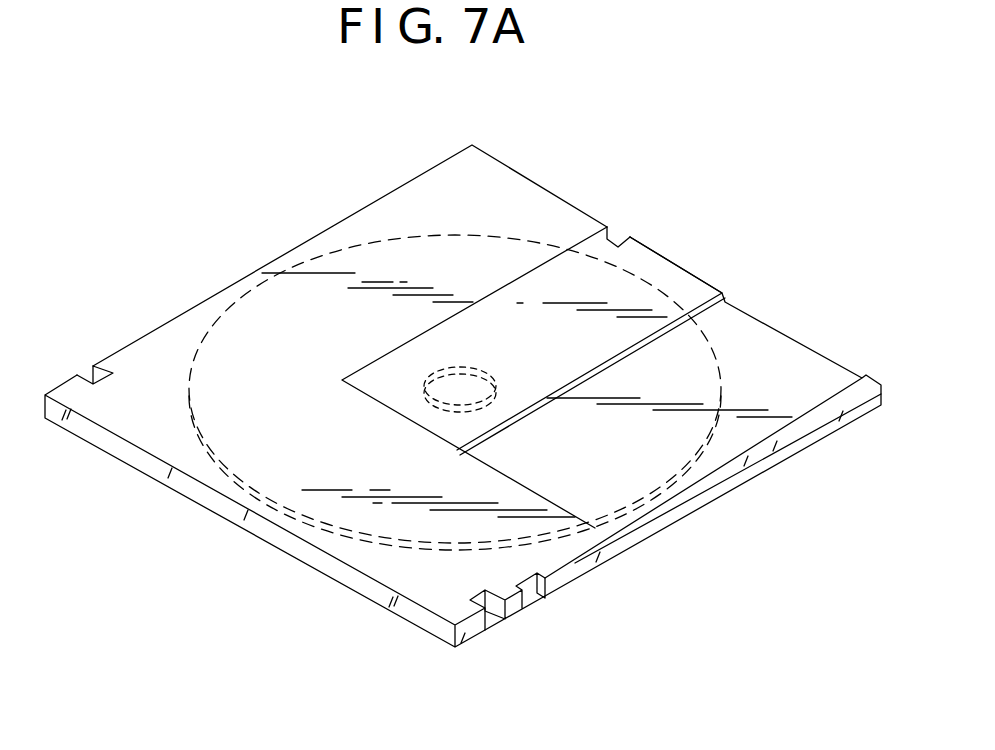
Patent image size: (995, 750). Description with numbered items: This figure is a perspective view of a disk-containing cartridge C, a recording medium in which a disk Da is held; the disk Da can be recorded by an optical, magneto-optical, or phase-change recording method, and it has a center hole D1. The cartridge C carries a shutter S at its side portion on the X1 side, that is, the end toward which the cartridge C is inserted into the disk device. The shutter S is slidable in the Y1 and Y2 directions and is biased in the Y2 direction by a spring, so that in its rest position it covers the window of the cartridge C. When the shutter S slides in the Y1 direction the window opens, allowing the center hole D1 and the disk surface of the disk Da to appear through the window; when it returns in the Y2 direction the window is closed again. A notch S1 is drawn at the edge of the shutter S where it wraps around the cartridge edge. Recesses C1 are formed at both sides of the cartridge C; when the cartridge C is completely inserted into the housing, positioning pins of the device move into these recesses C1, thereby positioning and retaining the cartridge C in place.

The cartridge C is at (145, 430).
The recess C1 is at (125, 348).
The shutter S is at (672, 267).
The shutter notch S1 is at (620, 233).
The disk Da is at (237, 310).
The center hole D1 is at (430, 402).
The X1 direction X1 is at (572, 180).
The Y1 direction Y1 is at (777, 280).
The Y2 direction Y2 is at (865, 332).